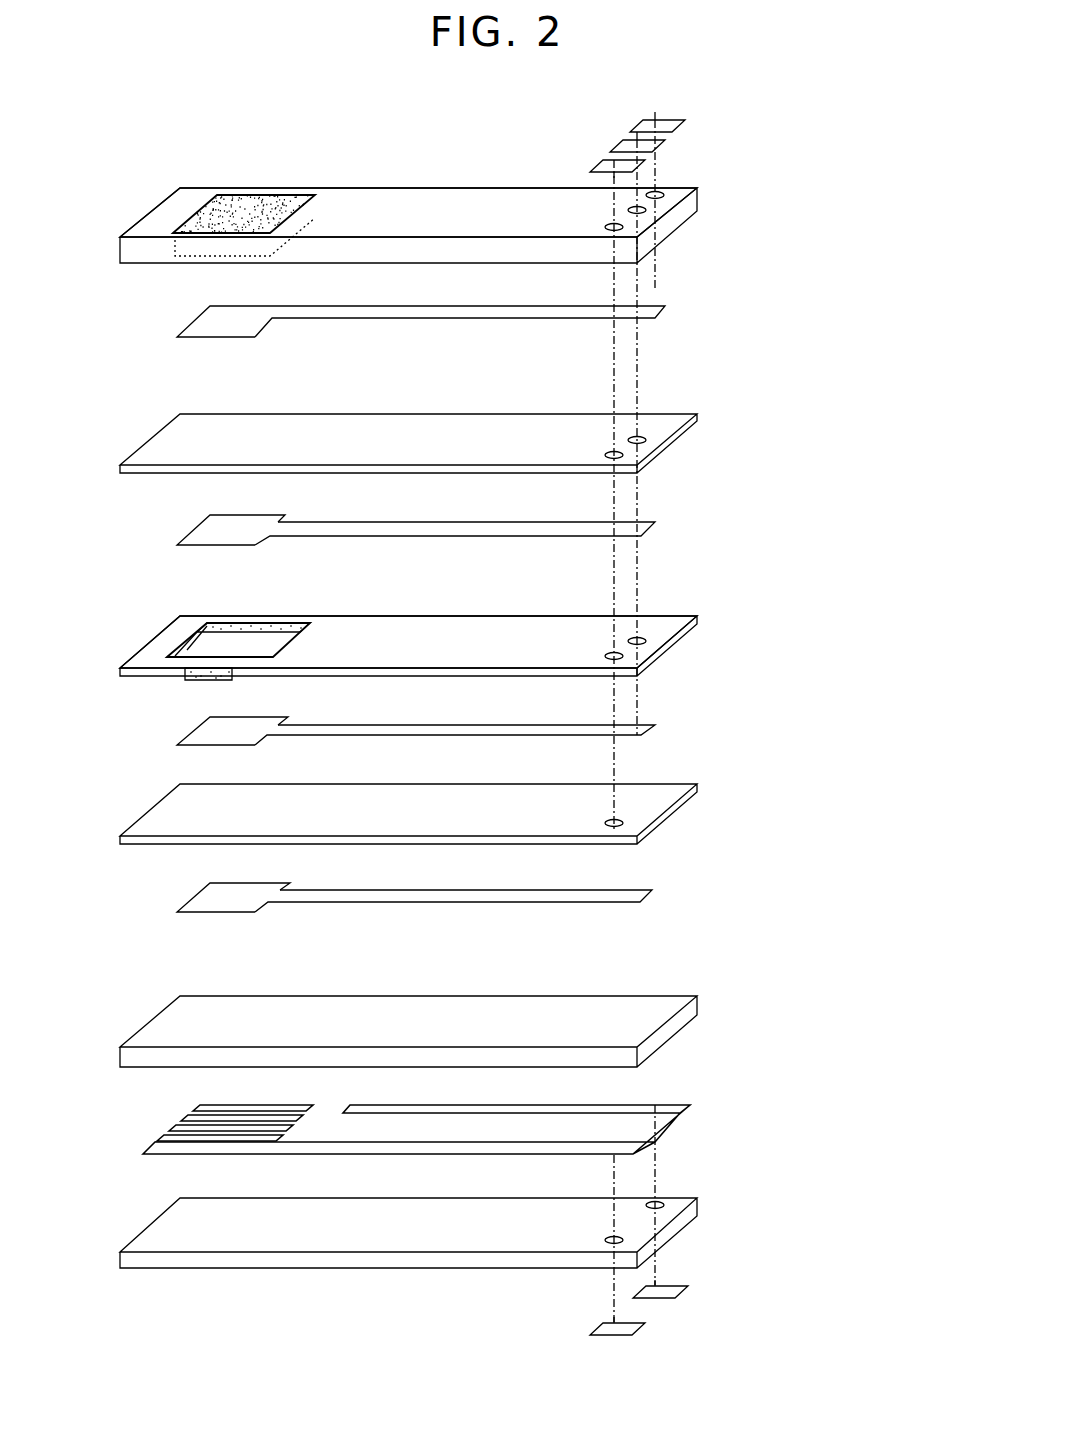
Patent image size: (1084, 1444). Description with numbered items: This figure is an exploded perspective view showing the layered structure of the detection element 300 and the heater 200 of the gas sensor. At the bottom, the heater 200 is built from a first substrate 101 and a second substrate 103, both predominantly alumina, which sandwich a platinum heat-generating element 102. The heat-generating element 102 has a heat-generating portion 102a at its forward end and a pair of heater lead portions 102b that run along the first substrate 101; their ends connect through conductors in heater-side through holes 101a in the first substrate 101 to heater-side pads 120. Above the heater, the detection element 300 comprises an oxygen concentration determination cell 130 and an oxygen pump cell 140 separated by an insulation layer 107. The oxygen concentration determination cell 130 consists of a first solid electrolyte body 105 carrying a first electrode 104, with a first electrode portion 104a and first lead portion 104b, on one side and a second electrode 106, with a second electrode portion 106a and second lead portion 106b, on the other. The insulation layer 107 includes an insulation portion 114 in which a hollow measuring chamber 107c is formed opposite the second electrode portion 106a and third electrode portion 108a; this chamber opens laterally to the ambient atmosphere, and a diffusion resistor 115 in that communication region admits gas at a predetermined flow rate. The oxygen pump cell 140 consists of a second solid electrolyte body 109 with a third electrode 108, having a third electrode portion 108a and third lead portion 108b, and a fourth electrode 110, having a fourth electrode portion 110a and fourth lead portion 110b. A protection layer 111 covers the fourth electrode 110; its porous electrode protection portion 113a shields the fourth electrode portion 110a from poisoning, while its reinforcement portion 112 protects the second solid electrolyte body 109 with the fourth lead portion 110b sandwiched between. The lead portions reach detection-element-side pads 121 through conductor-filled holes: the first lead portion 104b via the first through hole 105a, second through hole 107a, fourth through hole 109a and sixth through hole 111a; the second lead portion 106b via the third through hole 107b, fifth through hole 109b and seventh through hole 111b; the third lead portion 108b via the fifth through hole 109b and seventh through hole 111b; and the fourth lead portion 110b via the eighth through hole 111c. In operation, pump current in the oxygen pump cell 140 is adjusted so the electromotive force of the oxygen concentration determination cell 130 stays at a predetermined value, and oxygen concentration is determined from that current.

The first substrate 101 is at (446, 1216).
The heater-side through holes 101a is at (614, 1237).
The heat-generating element 102 is at (425, 1127).
The heat-generating portion 102a is at (182, 1121).
The heater lead portions 102b is at (490, 1117).
The second substrate 103 is at (689, 1037).
The first electrode 104 is at (450, 916).
The first electrode portion 104a is at (233, 897).
The first lead portion 104b is at (463, 906).
The first solid electrolyte body 105 is at (446, 814).
The first through hole 105a is at (604, 823).
The second electrode 106 is at (451, 746).
The second electrode portion 106a is at (236, 727).
The second lead portion 106b is at (463, 728).
The insulation layer 107 is at (427, 629).
The second through hole 107a is at (604, 656).
The third through hole 107b is at (628, 641).
The measuring chamber 107c is at (268, 648).
The third electrode 108 is at (451, 548).
The third electrode portion 108a is at (235, 528).
The third lead portion 108b is at (465, 528).
The second solid electrolyte body 109 is at (446, 443).
The fourth through hole 109a is at (604, 455).
The fifth through hole 109b is at (628, 440).
The fourth electrode 110 is at (455, 339).
The fourth electrode portion 110a is at (236, 320).
The fourth lead portion 110b is at (462, 312).
The protection layer 111 is at (683, 238).
The sixth through hole 111a is at (604, 227).
The seventh through hole 111b is at (628, 210).
The eighth through hole 111c is at (660, 194).
The reinforcement portion 112 is at (395, 195).
The porous electrode protection portion 113a is at (240, 198).
The insulation portion 114 is at (400, 636).
The diffusion resistor 115 is at (266, 618).
The heater-side pads 120 is at (640, 1330).
The detection-element-side pads 121 is at (604, 160).
The oxygen concentration determination cell 130 is at (778, 713).
The oxygen pump cell 140 is at (778, 300).
The heater 200 is at (840, 988).
The detection element 300 is at (840, 177).